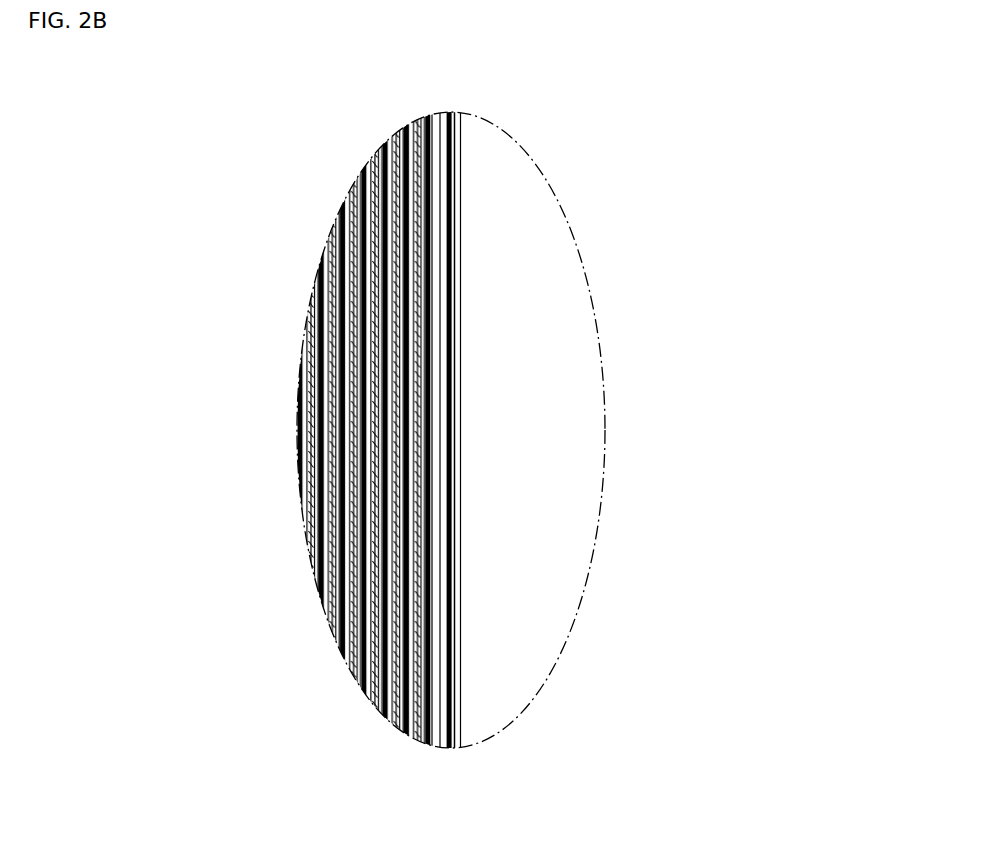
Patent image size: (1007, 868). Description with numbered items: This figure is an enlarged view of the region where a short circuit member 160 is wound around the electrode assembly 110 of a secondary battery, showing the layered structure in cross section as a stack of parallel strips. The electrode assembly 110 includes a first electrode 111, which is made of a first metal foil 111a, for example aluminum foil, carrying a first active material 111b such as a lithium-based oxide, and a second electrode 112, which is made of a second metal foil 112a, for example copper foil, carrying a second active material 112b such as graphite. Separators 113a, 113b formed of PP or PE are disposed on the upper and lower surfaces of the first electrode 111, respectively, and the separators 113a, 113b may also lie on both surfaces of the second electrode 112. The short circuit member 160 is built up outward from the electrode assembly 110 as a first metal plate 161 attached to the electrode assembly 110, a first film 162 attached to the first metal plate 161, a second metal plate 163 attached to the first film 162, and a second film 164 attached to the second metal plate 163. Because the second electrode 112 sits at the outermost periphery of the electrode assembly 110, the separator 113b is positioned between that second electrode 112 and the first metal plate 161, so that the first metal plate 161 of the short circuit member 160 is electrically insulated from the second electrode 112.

The electrode assembly 110 is at (103, 252).
The first electrode 111 is at (167, 428).
The first metal foil 111a is at (392, 423).
The first active material 111b is at (378, 462).
The second electrode 112 is at (167, 290).
The second metal foil 112a is at (405, 275).
The second active material 112b is at (405, 320).
The separator 113a is at (322, 375).
The separator 113b is at (418, 245).
The short circuit member 160 is at (660, 202).
The first metal plate 161 is at (427, 160).
The first film 162 is at (440, 190).
The second metal plate 163 is at (448, 222).
The second film 164 is at (460, 252).